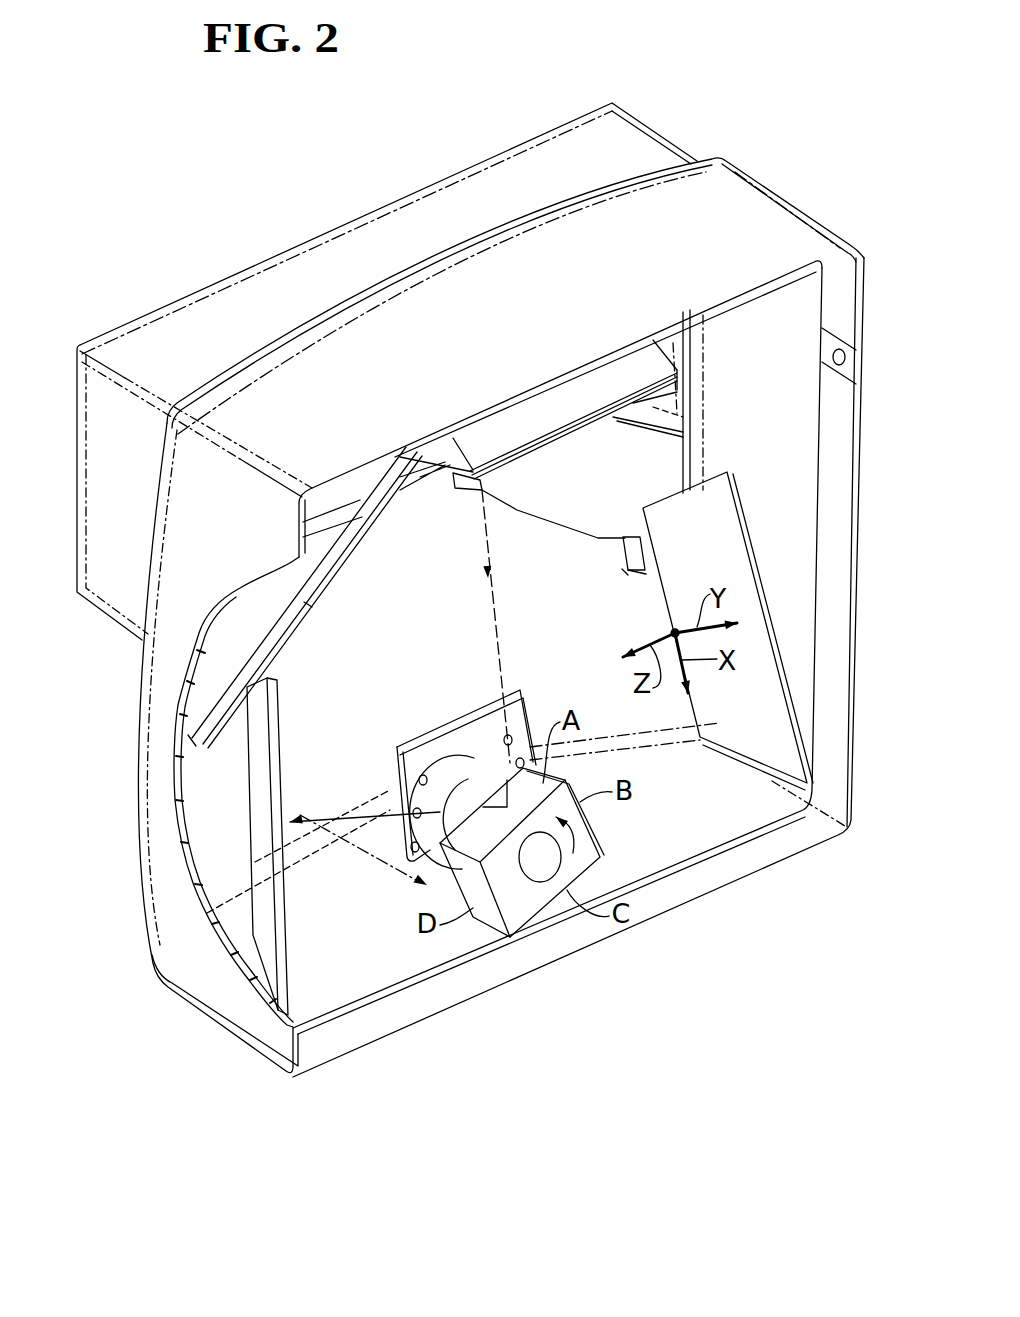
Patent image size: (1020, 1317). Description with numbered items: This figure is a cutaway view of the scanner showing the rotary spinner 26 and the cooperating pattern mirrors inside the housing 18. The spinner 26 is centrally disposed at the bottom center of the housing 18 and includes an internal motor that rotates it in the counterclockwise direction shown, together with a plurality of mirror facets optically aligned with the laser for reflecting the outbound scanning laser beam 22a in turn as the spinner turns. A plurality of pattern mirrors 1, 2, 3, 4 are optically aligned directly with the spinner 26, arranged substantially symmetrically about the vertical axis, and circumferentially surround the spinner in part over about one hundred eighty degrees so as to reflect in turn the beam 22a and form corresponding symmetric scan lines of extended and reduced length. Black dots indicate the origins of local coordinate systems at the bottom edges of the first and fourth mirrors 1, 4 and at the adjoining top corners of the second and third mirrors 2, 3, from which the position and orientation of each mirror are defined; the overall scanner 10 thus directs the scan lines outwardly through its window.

The display apparatus housing 10 is at (255, 198).
The housing 18 is at (759, 218).
The first pattern mirror 1 is at (672, 595).
The second pattern mirror 2 is at (563, 513).
The third pattern mirror 3 is at (290, 633).
The fourth pattern mirror 4 is at (279, 721).
The outbound scanning laser beam 22a is at (490, 614).
The rotary spinner 26 is at (610, 829).